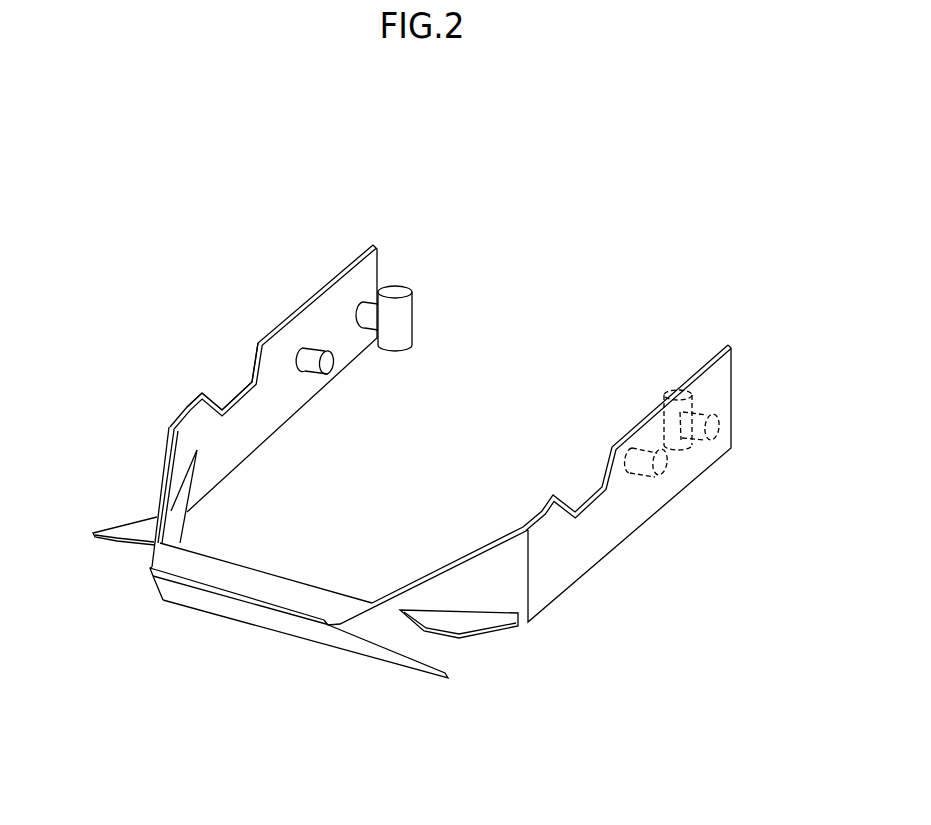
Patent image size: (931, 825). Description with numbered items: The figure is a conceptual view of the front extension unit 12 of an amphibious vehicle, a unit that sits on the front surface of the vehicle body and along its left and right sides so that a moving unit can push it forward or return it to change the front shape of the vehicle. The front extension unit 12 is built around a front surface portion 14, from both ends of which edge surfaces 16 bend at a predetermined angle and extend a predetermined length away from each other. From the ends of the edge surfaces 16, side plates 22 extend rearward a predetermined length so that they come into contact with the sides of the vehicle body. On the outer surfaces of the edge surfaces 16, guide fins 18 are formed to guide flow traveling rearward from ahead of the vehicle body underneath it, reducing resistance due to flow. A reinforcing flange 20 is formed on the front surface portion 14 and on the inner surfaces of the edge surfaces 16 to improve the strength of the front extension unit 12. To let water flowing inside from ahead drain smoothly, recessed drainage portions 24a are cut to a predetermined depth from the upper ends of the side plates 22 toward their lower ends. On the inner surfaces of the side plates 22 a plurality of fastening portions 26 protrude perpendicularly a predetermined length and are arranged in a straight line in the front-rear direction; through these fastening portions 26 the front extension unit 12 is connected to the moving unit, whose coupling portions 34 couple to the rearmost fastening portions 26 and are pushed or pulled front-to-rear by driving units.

The front extension unit 12 is at (176, 375).
The front surface portion 14 is at (195, 605).
The edge surfaces 16 is at (388, 632).
The guide fins 18 is at (473, 622).
The reinforcing flange 20 is at (183, 485).
The side plates 22 is at (584, 545).
The recessed drainage portions 24a is at (235, 397).
The fastening portions 26 is at (365, 305).
The coupling portions 34 is at (392, 340).